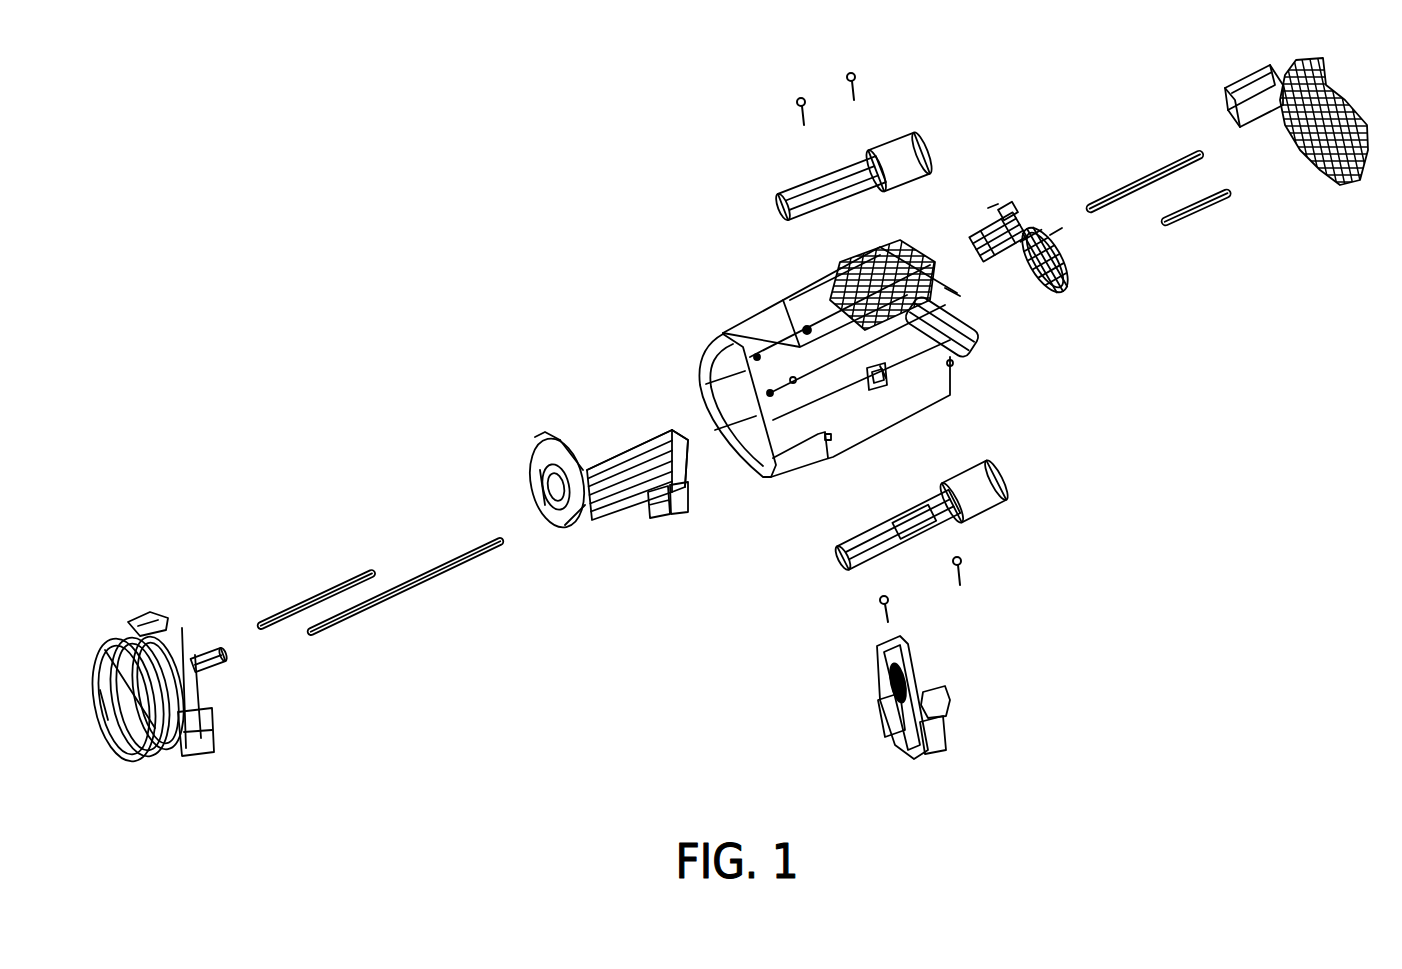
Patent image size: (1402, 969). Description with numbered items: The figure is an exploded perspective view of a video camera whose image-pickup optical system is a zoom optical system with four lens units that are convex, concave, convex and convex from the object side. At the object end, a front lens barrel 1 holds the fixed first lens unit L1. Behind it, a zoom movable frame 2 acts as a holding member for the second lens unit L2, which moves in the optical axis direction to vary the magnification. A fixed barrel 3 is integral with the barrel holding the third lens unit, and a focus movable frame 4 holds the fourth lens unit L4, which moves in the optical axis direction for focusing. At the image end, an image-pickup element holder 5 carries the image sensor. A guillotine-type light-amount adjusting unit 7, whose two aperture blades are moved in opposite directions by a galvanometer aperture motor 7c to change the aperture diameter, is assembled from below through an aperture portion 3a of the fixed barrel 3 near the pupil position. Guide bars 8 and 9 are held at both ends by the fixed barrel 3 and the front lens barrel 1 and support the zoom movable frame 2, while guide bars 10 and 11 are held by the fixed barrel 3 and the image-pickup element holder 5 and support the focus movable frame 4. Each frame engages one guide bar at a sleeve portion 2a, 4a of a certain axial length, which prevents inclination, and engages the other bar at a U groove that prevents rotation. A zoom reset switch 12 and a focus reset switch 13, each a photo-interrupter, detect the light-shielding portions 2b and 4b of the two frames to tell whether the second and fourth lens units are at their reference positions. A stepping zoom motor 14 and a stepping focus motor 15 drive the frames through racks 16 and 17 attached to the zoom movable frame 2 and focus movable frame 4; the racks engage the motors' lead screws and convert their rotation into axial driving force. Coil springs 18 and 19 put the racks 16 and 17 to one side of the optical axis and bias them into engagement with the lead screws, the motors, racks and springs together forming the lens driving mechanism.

The front lens barrel 1 is at (185, 752).
The first lens unit L1 is at (105, 715).
The zoom movable frame 2 is at (610, 540).
The sleeve portion 2a is at (687, 460).
The light-shielding portion 2b is at (610, 458).
The second lens unit L2 is at (543, 523).
The fixed barrel 3 is at (733, 331).
The aperture portion 3a is at (783, 297).
The focus movable frame 4 is at (1070, 290).
The sleeve portion 4a is at (980, 252).
The light-shielding portion 4b is at (1060, 227).
The fourth lens unit L4 is at (953, 290).
The image-pickup element holder 5 is at (1358, 177).
The light-amount adjusting unit 7 is at (943, 752).
The aperture motor 7c is at (946, 688).
The guide bar 8 is at (317, 593).
The guide bar 9 is at (403, 593).
The guide bar 10 is at (1140, 181).
The guide bar 11 is at (1197, 213).
The zoom reset switch 12 is at (950, 365).
The focus reset switch 13 is at (962, 373).
The zoom motor 14 is at (977, 517).
The focus motor 15 is at (790, 187).
The rack 16 is at (653, 517).
The rack 17 is at (993, 210).
The coil spring 18 is at (693, 517).
The coil spring 19 is at (1010, 214).